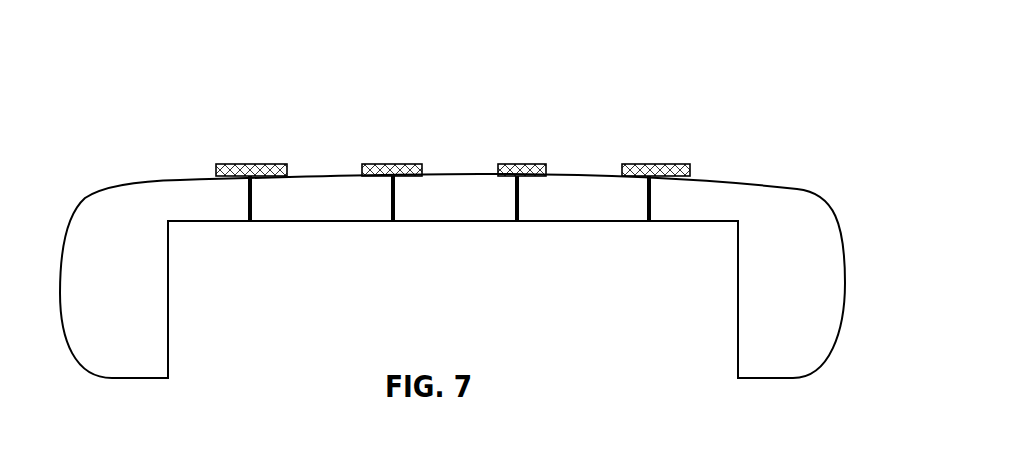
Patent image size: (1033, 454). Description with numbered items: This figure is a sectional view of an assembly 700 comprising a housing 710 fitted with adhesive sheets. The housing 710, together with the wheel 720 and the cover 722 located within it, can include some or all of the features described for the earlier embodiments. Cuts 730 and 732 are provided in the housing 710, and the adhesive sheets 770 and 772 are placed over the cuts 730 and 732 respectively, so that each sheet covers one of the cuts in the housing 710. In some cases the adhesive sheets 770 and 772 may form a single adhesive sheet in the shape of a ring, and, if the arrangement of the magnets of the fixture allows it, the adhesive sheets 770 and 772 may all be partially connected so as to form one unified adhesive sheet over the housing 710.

The electronic device 700 is at (672, 56).
The housing 710 is at (128, 202).
The wheel 720 is at (344, 213).
The cover 722 is at (480, 202).
The cut 730 is at (248, 203).
The cut 732 is at (391, 208).
The adhesive sheet 770 is at (240, 165).
The adhesive sheet 772 is at (391, 165).